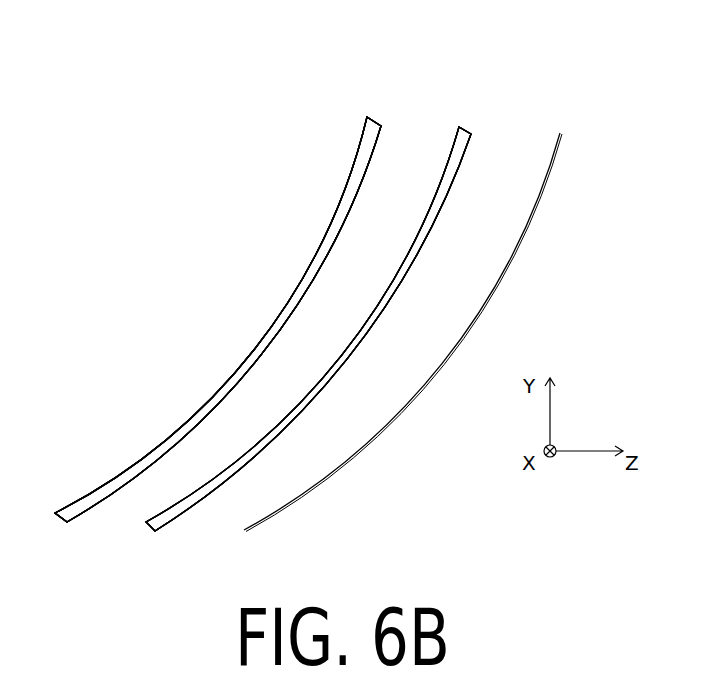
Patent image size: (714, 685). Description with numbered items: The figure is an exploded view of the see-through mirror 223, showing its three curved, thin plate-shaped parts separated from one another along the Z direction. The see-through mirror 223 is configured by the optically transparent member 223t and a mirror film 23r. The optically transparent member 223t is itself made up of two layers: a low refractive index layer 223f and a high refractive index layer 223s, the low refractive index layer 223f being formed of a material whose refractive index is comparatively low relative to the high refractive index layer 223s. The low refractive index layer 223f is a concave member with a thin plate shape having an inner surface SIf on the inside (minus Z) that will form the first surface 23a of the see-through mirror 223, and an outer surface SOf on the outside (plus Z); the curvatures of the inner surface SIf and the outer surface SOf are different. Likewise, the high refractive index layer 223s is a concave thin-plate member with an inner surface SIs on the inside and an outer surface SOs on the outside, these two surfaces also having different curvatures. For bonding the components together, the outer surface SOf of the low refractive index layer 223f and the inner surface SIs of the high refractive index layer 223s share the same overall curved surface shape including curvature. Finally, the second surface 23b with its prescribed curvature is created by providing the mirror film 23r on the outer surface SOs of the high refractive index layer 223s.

The see-through mirror 223 is at (308, 120).
The optically transparent member 223t is at (258, 178).
The low refractive index layer 223f is at (322, 256).
The high refractive index layer 223s is at (415, 248).
The inner surface SIf is at (277, 316).
The outer surface SOf is at (279, 322).
The first surface 23a is at (218, 319).
The inner surface SIs is at (378, 302).
The outer surface SOs is at (375, 320).
The second surface 23b is at (308, 329).
The mirror film 23r is at (523, 237).